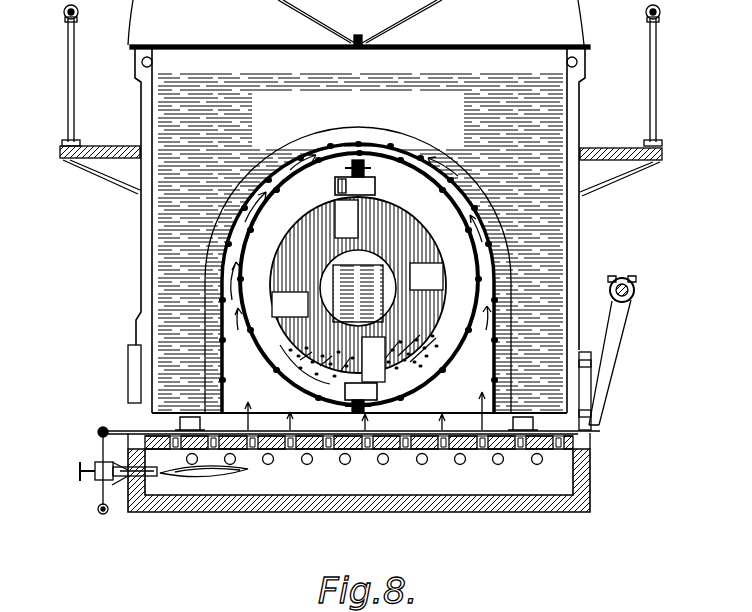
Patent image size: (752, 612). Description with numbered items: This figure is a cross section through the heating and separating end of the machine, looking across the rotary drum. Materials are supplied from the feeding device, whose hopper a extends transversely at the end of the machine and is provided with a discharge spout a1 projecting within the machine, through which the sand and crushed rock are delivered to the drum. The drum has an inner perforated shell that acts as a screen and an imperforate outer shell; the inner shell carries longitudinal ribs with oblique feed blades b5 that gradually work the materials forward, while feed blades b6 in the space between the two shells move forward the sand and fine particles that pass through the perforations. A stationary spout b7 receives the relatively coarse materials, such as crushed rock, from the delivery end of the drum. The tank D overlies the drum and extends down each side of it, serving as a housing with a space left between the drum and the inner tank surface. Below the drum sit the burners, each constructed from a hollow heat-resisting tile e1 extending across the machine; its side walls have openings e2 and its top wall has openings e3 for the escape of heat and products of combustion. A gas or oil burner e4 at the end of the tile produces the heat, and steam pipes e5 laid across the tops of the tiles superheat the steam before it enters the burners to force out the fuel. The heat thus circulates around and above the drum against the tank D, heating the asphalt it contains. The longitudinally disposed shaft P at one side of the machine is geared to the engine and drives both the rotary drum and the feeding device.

The hopper a is at (472, 46).
The tank D is at (155, 206).
The feed blades b5 is at (270, 290).
The feed blades b6 is at (377, 190).
The stationary spout b7 is at (358, 288).
The shaft P is at (624, 300).
The discharge spout a1 is at (168, 416).
The hollow tile e1 is at (403, 496).
The openings e2 is at (347, 466).
The openings e3 is at (513, 442).
The gas or oil burner e4 is at (136, 513).
The pipes e5 is at (403, 431).